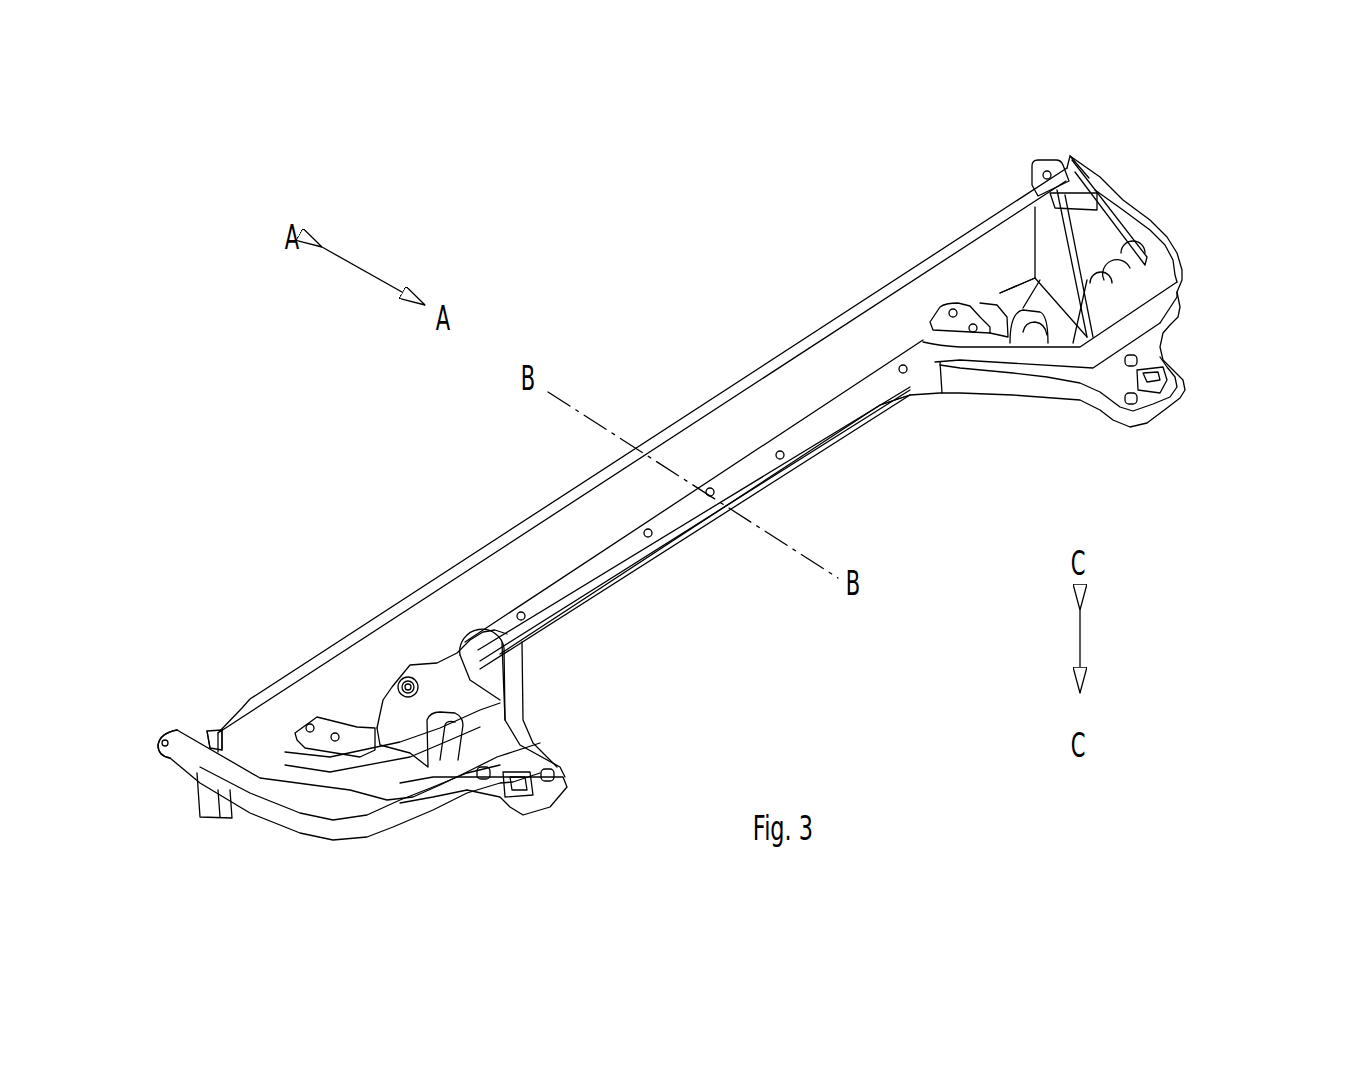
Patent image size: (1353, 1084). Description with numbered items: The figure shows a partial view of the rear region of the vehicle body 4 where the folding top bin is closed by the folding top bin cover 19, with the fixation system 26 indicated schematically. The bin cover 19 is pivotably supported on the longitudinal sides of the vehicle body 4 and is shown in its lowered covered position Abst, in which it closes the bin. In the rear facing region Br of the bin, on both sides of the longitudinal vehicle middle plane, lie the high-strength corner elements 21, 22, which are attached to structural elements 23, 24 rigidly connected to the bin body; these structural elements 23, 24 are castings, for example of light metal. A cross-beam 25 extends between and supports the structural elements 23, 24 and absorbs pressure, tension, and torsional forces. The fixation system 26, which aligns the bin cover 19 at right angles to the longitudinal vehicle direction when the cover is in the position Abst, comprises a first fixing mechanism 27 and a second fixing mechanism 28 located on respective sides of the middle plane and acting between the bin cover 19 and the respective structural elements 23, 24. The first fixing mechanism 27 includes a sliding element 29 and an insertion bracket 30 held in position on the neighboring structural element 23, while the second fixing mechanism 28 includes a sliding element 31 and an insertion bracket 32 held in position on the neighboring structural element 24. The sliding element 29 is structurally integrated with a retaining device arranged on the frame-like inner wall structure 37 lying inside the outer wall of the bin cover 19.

The vehicle body 4 is at (166, 722).
The folding top bin cover 19 is at (800, 336).
The corner element 21 is at (365, 841).
The corner element 22 is at (1134, 203).
The structural element 23 is at (289, 833).
The structural element 24 is at (1168, 235).
The cross-beam 25 is at (858, 428).
The fixation system 26 is at (1057, 156).
The first fixing mechanism 27 is at (234, 738).
The second fixing mechanism 28 is at (1107, 177).
The sliding element 29 is at (214, 739).
The insertion bracket 30 is at (203, 722).
The sliding element 31 is at (1072, 190).
The insertion bracket 32 is at (1080, 173).
The inner wall structure 37 is at (553, 524).
The lowered covered position Abst is at (453, 554).
The rear facing region Br is at (1198, 276).